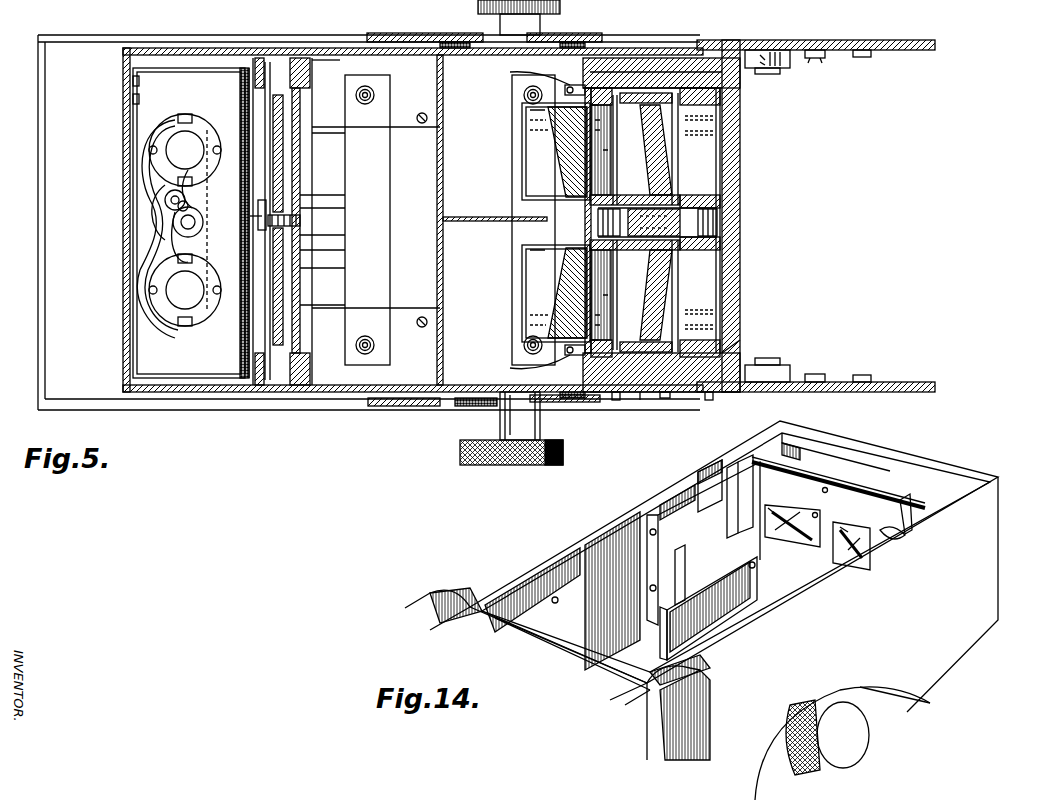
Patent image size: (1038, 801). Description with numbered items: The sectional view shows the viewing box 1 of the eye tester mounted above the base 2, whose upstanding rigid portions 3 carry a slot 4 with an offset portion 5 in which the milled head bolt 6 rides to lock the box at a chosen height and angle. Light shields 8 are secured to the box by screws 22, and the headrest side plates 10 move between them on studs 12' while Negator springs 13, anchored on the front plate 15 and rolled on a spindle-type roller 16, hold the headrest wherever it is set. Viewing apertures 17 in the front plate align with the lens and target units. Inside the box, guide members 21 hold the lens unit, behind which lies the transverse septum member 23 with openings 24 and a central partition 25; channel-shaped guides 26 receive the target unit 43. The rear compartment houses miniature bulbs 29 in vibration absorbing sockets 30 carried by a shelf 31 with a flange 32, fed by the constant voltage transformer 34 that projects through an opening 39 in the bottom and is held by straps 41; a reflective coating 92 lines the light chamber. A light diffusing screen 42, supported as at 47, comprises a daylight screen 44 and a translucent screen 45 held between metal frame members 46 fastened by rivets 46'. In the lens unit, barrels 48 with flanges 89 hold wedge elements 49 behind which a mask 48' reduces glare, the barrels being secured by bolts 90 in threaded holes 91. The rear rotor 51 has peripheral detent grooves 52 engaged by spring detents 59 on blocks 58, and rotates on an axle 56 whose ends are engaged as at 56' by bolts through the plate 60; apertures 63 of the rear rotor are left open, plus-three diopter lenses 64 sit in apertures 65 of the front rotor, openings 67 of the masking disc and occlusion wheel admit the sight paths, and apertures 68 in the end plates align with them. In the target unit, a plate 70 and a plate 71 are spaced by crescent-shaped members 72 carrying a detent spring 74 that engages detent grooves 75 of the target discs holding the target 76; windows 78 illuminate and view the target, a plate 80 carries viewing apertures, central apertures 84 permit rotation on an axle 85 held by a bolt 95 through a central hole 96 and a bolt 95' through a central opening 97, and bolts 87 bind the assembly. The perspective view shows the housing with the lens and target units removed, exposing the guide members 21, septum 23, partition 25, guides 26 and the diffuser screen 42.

In FIG. 5, the viewing box 1 is at (165, 50).
In FIG. 14, the viewing box 1 is at (1003, 556).
In FIG. 5, the base 2 is at (369, 222).
In FIG. 5, the upstanding rigid portions 3 is at (572, 28).
In FIG. 14, the upstanding rigid portions 3 is at (865, 688).
In FIG. 5, the slot 4 is at (440, 35).
In FIG. 5, the offset portion 5 is at (475, 36).
In FIG. 5, the milled head bolt 6 is at (563, 452).
In FIG. 14, the milled head bolt 6 is at (850, 720).
In FIG. 5, the light shields 8 is at (932, 40).
In FIG. 14, the light shields 8 is at (470, 600).
In FIG. 5, the side plates 10 is at (872, 55).
In FIG. 5, the stud 12' is at (863, 216).
In FIG. 5, the Negator springs 13 is at (312, 127).
In FIG. 5, the front plate 15 is at (760, 365).
In FIG. 5, the spindle-type roller 16 is at (790, 68).
In FIG. 5, the viewing apertures 17 is at (722, 158).
In FIG. 5, the guide members 21 is at (595, 398).
In FIG. 14, the guide members 21 is at (590, 548).
In FIG. 5, the screws 22 is at (715, 395).
In FIG. 5, the transverse septum member 23 is at (437, 90).
In FIG. 14, the transverse septum member 23 is at (840, 585).
In FIG. 5, the openings 24 is at (440, 150).
In FIG. 14, the openings 24 is at (810, 608).
In FIG. 5, the partition 25 is at (445, 200).
In FIG. 14, the partition 25 is at (745, 640).
In FIG. 5, the channel-shaped guides 26 is at (258, 58).
In FIG. 14, the channel-shaped guides 26 is at (718, 475).
In FIG. 5, the miniature bulbs 29 is at (170, 138).
In FIG. 5, the vibration absorbing sockets 30 is at (160, 170).
In FIG. 5, the shelf 31 is at (150, 360).
In FIG. 5, the flange 32 is at (133, 72).
In FIG. 5, the constant voltage transformer 34 is at (405, 300).
In FIG. 5, the opening 39 is at (312, 320).
In FIG. 5, the straps 41 is at (443, 235).
In FIG. 5, the light diffusing screen 42 is at (240, 100).
In FIG. 14, the light diffusing screen 42 is at (835, 472).
In FIG. 5, the target unit 43 is at (305, 70).
In FIG. 5, the daylight screen 44 is at (200, 228).
In FIG. 5, the translucent screen 45 is at (185, 220).
In FIG. 14, the translucent screen 45 is at (860, 548).
In FIG. 5, the metal frame members 46 is at (215, 251).
In FIG. 14, the metal frame members 46 is at (845, 488).
In FIG. 14, the rivets 46' is at (850, 515).
In FIG. 5, the diffuser support 47 is at (240, 100).
In FIG. 5, the barrels 48 is at (534, 214).
In FIG. 5, the mask 48' is at (533, 222).
In FIG. 5, the wedge elements 49 is at (555, 165).
In FIG. 5, the rear rotor 51 is at (740, 100).
In FIG. 5, the peripheral detent grooves 52 is at (740, 88).
In FIG. 5, the axle 56 is at (684, 209).
In FIG. 5, the axle threaded ends 56' is at (608, 210).
In FIG. 5, the blocks 58 is at (668, 398).
In FIG. 5, the spring detents 59 is at (618, 400).
In FIG. 5, the plate 60 is at (735, 342).
In FIG. 5, the apertures 63 is at (716, 295).
In FIG. 5, the plus three diopter lenses 64 is at (722, 180).
In FIG. 5, the apertures 65 is at (645, 395).
In FIG. 5, the openings 67 is at (600, 175).
In FIG. 5, the apertures 68 is at (555, 148).
In FIG. 5, the plate 70 is at (300, 266).
In FIG. 5, the plate 71 is at (245, 258).
In FIG. 5, the crescent-shaped members 72 is at (278, 95).
In FIG. 5, the detent spring 74 is at (268, 62).
In FIG. 5, the detent grooves 75 is at (260, 385).
In FIG. 5, the target 76 is at (312, 150).
In FIG. 5, the openings 78 is at (255, 125).
In FIG. 5, the plate 80 is at (300, 248).
In FIG. 5, the central apertures 84 is at (300, 232).
In FIG. 5, the axle 85 is at (290, 215).
In FIG. 5, the bolts 87 is at (300, 303).
In FIG. 5, the flanges 89 is at (580, 85).
In FIG. 5, the bolts 90 is at (526, 220).
In FIG. 5, the threaded holes 91 is at (600, 45).
In FIG. 5, the coating 92 is at (133, 98).
In FIG. 5, the bolt 95 is at (337, 203).
In FIG. 5, the bolt 95' is at (235, 210).
In FIG. 5, the central hole 96 is at (300, 200).
In FIG. 5, the central opening 97 is at (250, 195).